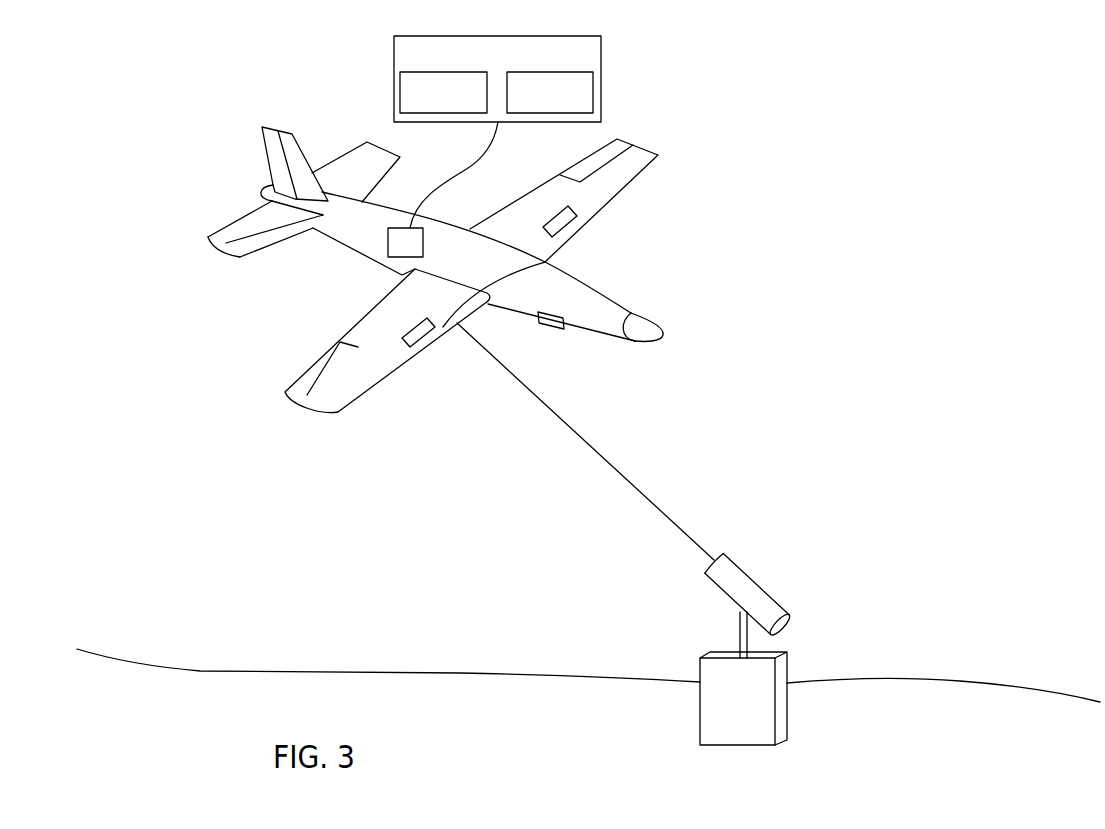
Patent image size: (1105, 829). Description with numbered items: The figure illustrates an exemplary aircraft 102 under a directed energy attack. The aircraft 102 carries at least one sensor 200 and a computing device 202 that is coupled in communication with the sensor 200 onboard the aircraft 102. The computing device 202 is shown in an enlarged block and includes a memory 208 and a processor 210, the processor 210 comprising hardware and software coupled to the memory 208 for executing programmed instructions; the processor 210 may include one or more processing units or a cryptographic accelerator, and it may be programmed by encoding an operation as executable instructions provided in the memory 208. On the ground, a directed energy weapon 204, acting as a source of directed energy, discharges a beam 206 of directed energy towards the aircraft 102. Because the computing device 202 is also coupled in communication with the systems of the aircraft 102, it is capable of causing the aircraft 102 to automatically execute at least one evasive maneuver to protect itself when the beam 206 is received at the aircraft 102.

The aircraft 102 is at (188, 100).
The sensor 200 is at (553, 313).
The computing device 202 is at (501, 145).
The directed energy weapon 204 is at (852, 585).
The beam of directed energy 206 is at (640, 493).
The memory 208 is at (400, 92).
The processor 210 is at (601, 93).